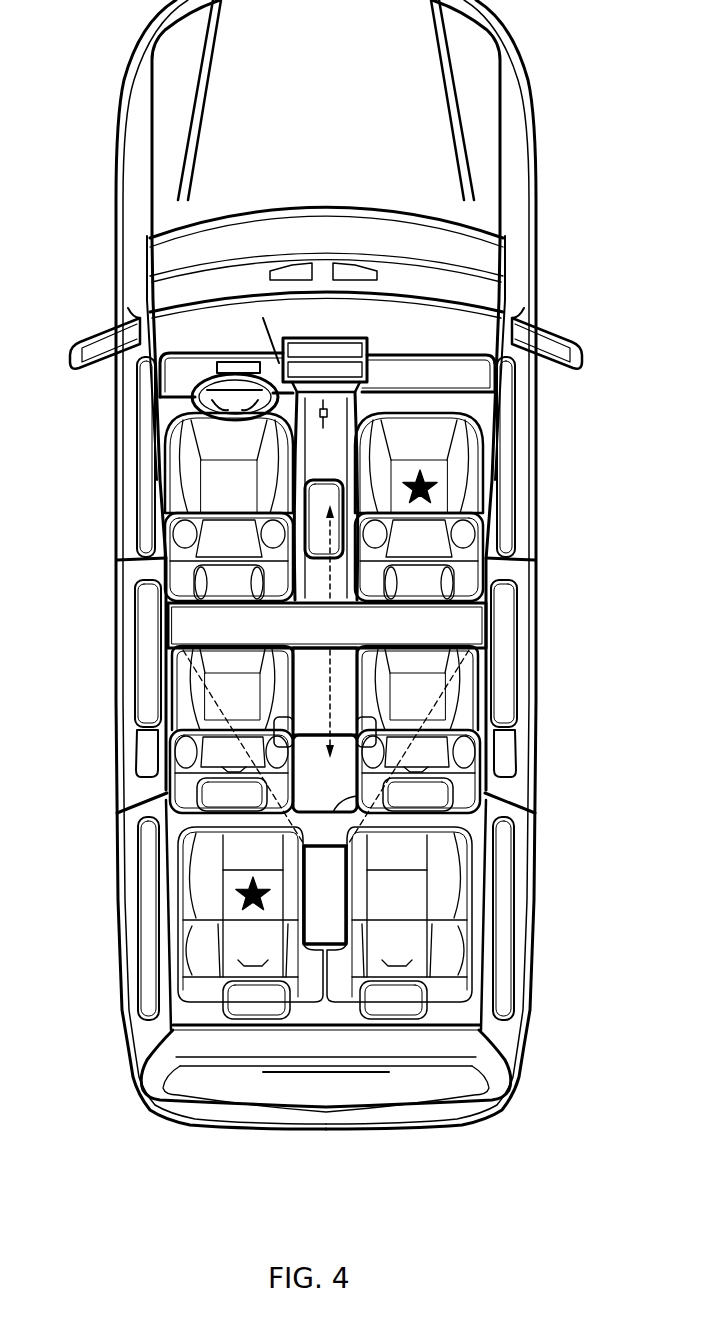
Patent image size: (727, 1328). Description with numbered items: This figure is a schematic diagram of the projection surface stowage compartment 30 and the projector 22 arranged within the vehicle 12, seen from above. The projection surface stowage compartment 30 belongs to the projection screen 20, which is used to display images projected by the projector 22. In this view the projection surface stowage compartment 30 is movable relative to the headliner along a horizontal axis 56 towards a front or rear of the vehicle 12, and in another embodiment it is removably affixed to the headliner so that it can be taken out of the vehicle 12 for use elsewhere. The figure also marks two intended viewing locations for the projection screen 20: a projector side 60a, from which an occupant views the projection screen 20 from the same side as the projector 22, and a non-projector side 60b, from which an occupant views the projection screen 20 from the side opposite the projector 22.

The vehicle 12 is at (538, 180).
The projection screen 20 is at (308, 588).
The projector 22 is at (313, 905).
The projection surface stowage compartment 30 is at (314, 641).
The horizontal axis 56 is at (334, 590).
The projector side 60a is at (235, 891).
The non-projector side 60b is at (437, 487).